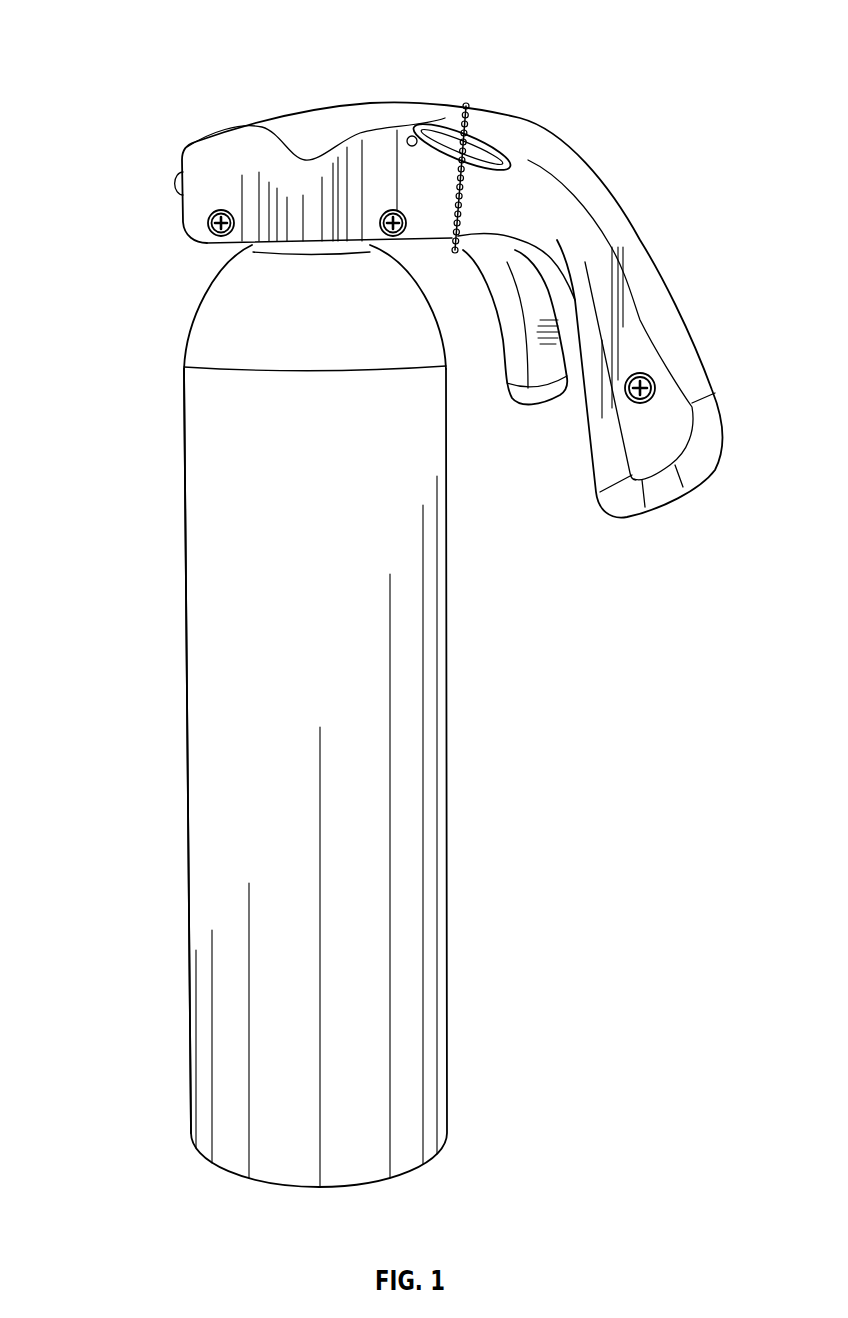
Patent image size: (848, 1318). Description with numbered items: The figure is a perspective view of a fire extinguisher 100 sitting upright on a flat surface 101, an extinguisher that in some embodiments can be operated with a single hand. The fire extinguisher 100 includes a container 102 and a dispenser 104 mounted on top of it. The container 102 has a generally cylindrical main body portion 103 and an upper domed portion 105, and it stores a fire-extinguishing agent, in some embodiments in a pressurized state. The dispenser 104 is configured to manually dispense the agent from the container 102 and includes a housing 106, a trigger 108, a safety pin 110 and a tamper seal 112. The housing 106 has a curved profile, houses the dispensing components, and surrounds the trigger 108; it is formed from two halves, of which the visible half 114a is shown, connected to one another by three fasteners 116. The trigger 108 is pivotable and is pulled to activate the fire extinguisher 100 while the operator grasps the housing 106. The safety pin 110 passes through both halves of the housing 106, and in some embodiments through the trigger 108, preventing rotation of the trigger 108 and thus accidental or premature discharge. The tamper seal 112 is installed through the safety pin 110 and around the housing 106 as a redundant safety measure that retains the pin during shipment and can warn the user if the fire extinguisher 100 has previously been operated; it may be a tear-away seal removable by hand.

The fire extinguisher 100 is at (128, 45).
The flat surface 101 is at (512, 1105).
The container 102 is at (473, 860).
The main body portion 103 is at (190, 887).
The dispenser 104 is at (627, 178).
The upper domed portion 105 is at (197, 307).
The housing 106 is at (640, 362).
The trigger 108 is at (547, 421).
The safety pin 110 is at (490, 147).
The tamper seal 112 is at (465, 107).
The housing half 114a is at (598, 242).
The fastener 116 is at (392, 211).